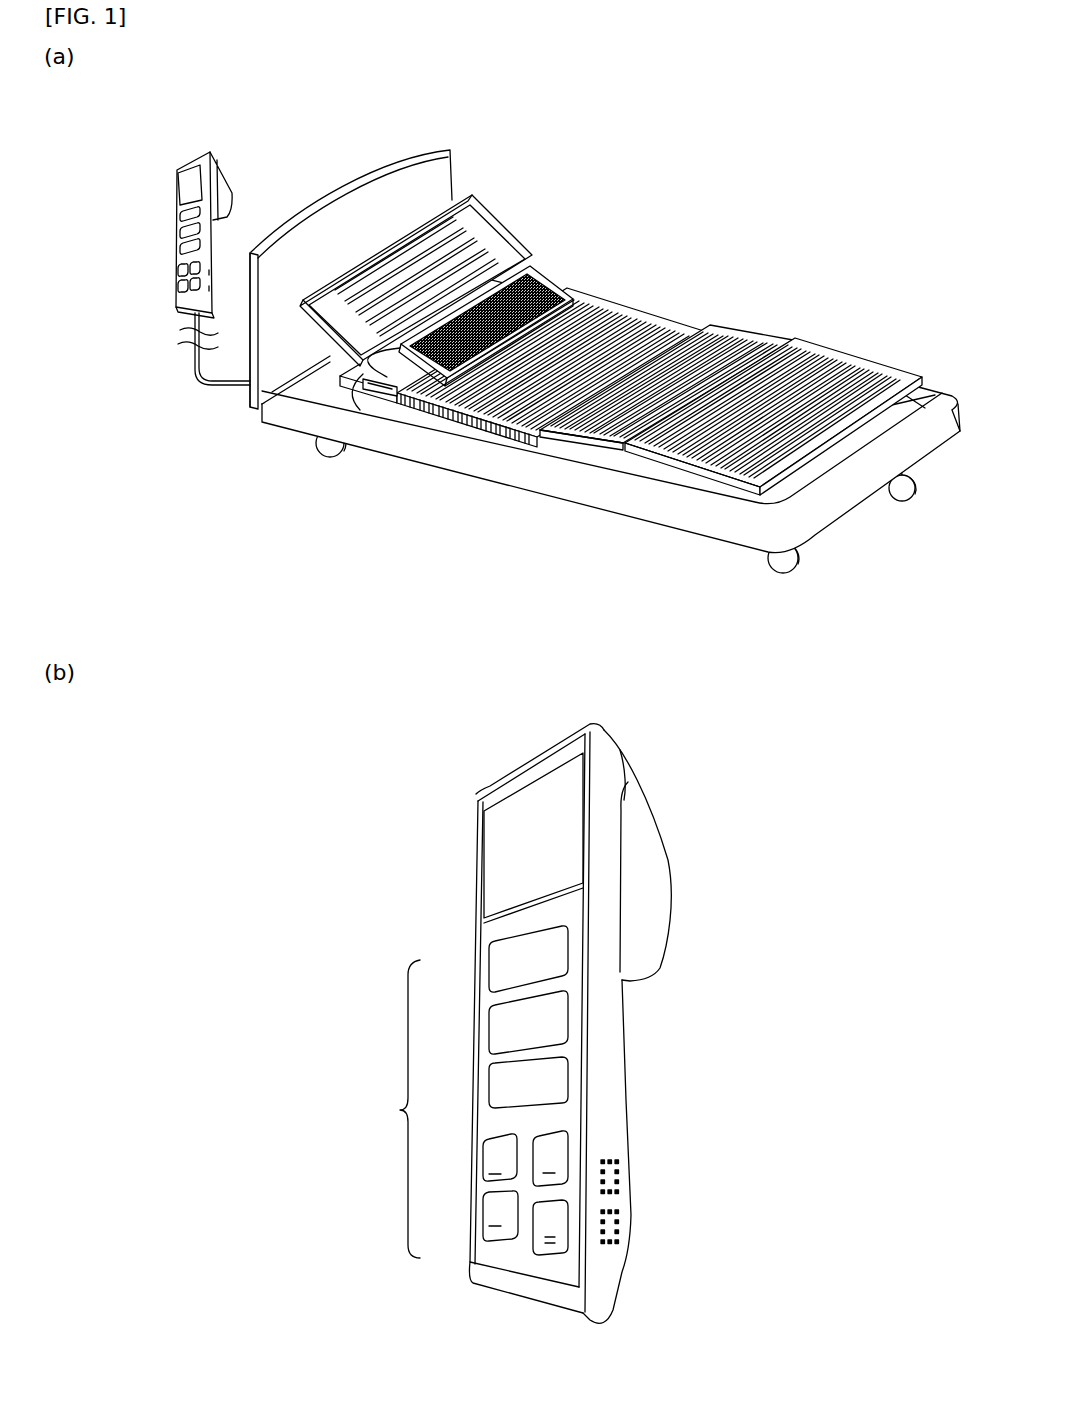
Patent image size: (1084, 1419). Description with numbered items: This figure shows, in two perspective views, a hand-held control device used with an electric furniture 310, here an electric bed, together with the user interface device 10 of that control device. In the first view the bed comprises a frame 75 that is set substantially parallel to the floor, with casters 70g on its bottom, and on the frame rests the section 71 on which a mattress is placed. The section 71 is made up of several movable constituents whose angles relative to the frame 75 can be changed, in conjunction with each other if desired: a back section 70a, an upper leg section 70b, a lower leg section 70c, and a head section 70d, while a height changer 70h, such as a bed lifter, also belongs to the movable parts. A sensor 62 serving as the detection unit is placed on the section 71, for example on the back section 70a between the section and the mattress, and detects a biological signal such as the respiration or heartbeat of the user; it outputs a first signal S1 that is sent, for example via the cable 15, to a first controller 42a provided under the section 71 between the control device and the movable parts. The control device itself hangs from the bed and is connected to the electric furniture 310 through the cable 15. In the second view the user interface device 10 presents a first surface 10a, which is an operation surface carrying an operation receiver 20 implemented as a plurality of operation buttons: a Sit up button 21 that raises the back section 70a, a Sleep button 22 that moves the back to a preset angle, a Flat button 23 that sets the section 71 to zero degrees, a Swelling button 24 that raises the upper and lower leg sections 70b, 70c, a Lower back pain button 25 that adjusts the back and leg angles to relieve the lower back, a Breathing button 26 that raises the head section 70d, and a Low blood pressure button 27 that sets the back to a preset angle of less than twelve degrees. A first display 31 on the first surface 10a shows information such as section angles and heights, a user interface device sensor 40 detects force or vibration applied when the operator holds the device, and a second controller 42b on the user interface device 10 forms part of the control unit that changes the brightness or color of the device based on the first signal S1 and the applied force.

The electric furniture 310 is at (852, 172).
The cable 15 is at (192, 318).
The head section 70d is at (498, 222).
The back section 70a is at (538, 272).
The sensor 62 is at (548, 293).
The section 71 is at (600, 283).
The upper leg section 70b is at (748, 331).
The lower leg section 70c is at (822, 344).
The first signal S1 is at (370, 404).
The first controller 42a is at (388, 396).
The height changer 70h is at (405, 401).
The frame 75 is at (550, 462).
The casters 70g is at (783, 565).
The user interface device 10 is at (475, 786).
The first display 31 is at (492, 847).
The first surface 10a is at (490, 932).
The operation receiver 20 is at (392, 1109).
The Sit up button 21 is at (495, 973).
The Sleep button 22 is at (495, 1030).
The Flat button 23 is at (495, 1083).
The Swelling button 24 is at (497, 1147).
The Lower back pain button 25 is at (545, 1172).
The Breathing button 26 is at (497, 1200).
The Low blood pressure button 27 is at (545, 1236).
The user interface device sensor 40 is at (625, 1168).
The second controller 42b is at (625, 1220).